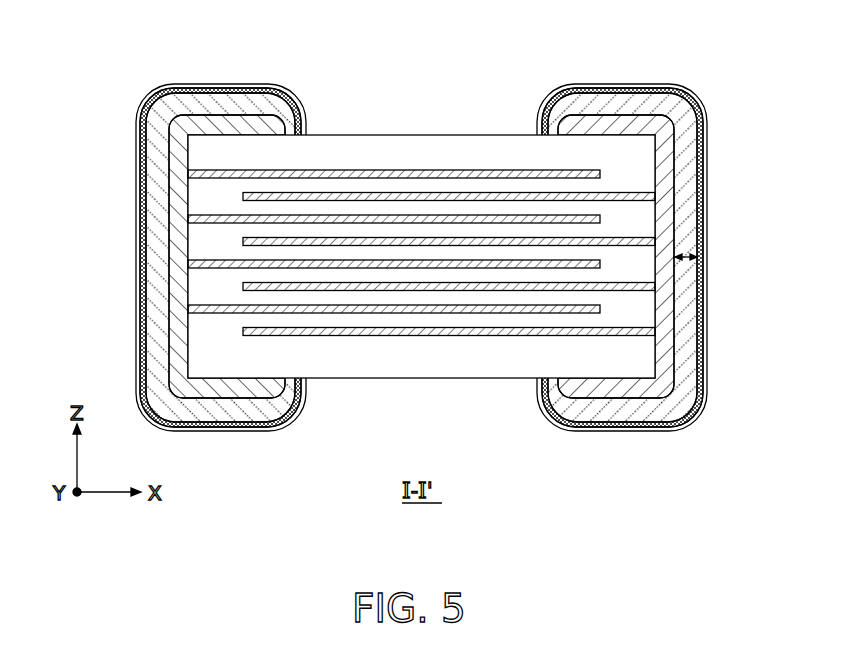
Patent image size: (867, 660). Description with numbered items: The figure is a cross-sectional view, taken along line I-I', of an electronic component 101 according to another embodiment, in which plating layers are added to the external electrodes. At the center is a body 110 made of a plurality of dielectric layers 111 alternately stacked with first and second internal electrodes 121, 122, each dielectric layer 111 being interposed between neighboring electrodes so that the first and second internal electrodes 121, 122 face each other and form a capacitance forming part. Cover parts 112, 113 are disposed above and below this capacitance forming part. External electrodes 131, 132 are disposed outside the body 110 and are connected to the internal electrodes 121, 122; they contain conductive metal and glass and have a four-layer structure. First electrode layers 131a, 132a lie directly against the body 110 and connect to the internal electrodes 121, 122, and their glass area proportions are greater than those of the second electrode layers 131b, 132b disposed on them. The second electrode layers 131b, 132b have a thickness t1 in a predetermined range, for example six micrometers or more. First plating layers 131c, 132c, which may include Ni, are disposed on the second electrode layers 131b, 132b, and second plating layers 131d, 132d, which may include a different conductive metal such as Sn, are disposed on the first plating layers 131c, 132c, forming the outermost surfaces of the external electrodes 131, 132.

The electronic component 101 is at (213, 42).
The body 110 is at (336, 135).
The dielectric layer 111 is at (458, 325).
The cover part 112 is at (398, 145).
The cover part 113 is at (336, 378).
The first internal electrode 121 is at (459, 171).
The second internal electrode 122 is at (518, 194).
The first external electrode 131 is at (58, 125).
The first electrode layer 131a is at (178, 130).
The second electrode layer 131b is at (158, 161).
The first plating layer 131c is at (144, 195).
The second plating layer 131d is at (138, 227).
The second external electrode 132 is at (785, 125).
The first electrode layer 132a is at (665, 128).
The second electrode layer 132b is at (686, 159).
The first plating layer 132c is at (700, 194).
The second plating layer 132d is at (705, 226).
The thickness t1 is at (690, 260).